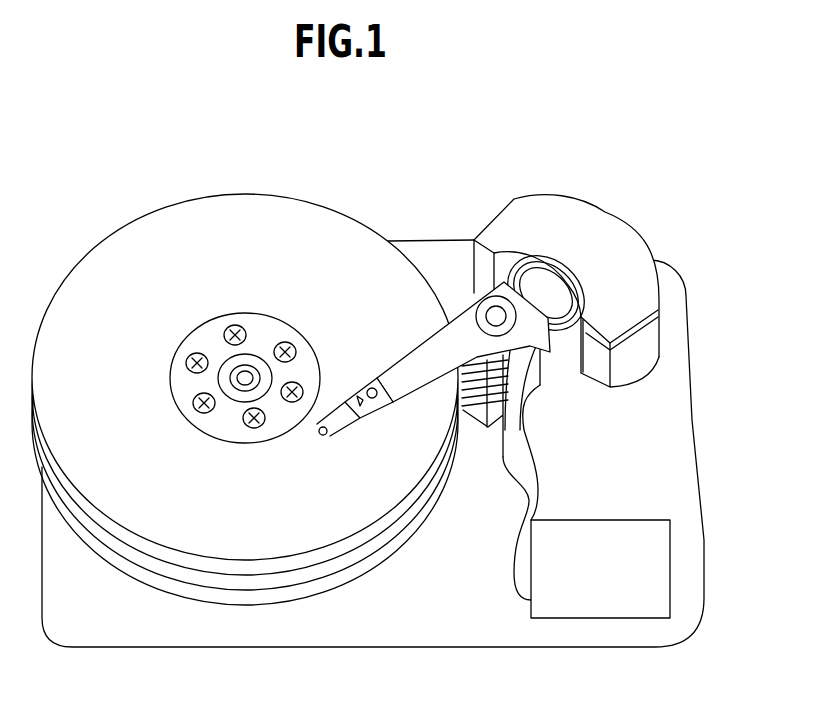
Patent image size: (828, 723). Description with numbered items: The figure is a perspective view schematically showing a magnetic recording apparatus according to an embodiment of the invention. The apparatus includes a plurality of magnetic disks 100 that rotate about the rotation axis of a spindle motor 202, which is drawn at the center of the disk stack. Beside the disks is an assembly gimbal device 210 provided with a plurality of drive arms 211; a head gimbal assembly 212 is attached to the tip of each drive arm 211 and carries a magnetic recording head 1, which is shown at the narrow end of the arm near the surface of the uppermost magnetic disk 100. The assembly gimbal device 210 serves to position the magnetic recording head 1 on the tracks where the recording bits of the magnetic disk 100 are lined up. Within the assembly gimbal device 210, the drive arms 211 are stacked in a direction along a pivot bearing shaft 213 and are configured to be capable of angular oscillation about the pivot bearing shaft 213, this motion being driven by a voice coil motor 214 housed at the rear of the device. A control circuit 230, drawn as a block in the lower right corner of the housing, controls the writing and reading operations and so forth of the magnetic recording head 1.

The magnetic recording head 1 is at (326, 435).
The magnetic disk 100 is at (127, 242).
The spindle motor 202 is at (247, 374).
The assembly gimbal device 210 is at (582, 192).
The drive arm 211 is at (420, 352).
The head gimbal assembly 212 is at (338, 402).
The pivot bearing shaft 213 is at (496, 316).
The voice coil motor 214 is at (574, 372).
The control circuit 230 is at (606, 619).